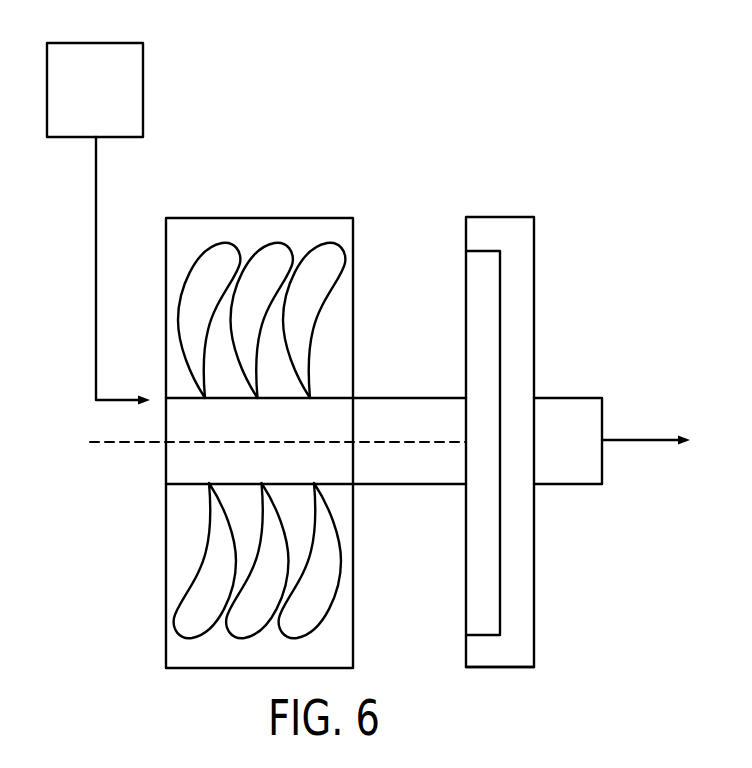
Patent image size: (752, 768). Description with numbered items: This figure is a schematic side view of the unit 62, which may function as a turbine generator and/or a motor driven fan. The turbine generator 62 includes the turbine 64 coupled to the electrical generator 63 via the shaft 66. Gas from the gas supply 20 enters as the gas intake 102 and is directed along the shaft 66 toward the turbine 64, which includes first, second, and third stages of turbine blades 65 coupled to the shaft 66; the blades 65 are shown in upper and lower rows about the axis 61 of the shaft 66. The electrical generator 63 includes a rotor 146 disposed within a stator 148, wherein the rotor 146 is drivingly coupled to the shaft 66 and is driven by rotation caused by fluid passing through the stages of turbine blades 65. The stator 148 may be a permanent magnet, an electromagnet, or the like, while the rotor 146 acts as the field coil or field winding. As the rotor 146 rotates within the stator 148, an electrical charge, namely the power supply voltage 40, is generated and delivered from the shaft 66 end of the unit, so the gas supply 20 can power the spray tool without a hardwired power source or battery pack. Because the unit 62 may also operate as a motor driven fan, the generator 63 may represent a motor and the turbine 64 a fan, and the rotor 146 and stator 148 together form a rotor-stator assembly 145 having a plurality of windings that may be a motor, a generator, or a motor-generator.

The gas supply 20 is at (110, 104).
The gas intake 102 is at (96, 268).
The turbine generator 62 is at (244, 412).
The turbine 64 is at (248, 215).
The turbine blades 65 is at (187, 636).
The shaft 66 is at (175, 462).
The rotational axis 61 is at (118, 447).
The electrical generator 63 is at (484, 435).
The stator 148 is at (535, 237).
The rotor 146 is at (465, 280).
The rotor-stator assembly 145 is at (504, 678).
The power supply voltage 40 is at (643, 440).